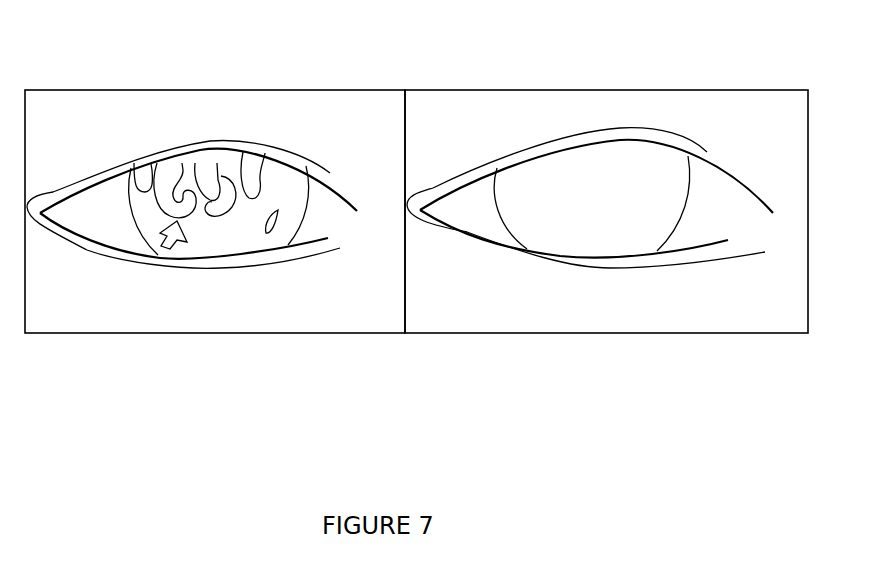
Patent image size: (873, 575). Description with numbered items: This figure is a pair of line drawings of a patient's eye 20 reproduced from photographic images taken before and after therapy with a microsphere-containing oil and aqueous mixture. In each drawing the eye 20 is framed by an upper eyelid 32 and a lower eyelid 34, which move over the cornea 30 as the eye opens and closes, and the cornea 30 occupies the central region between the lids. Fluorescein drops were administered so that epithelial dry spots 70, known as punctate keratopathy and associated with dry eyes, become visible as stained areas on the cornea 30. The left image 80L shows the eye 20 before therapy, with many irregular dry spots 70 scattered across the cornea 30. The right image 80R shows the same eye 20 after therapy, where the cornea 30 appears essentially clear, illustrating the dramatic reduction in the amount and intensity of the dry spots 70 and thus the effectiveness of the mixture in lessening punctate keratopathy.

The eye 20 is at (82, 205).
The cornea 30 is at (108, 207).
The upper eyelid 32 is at (270, 125).
The lower eyelid 34 is at (265, 298).
The dry spots 70 is at (143, 173).
The left image 80L is at (138, 307).
The right image 80R is at (518, 307).